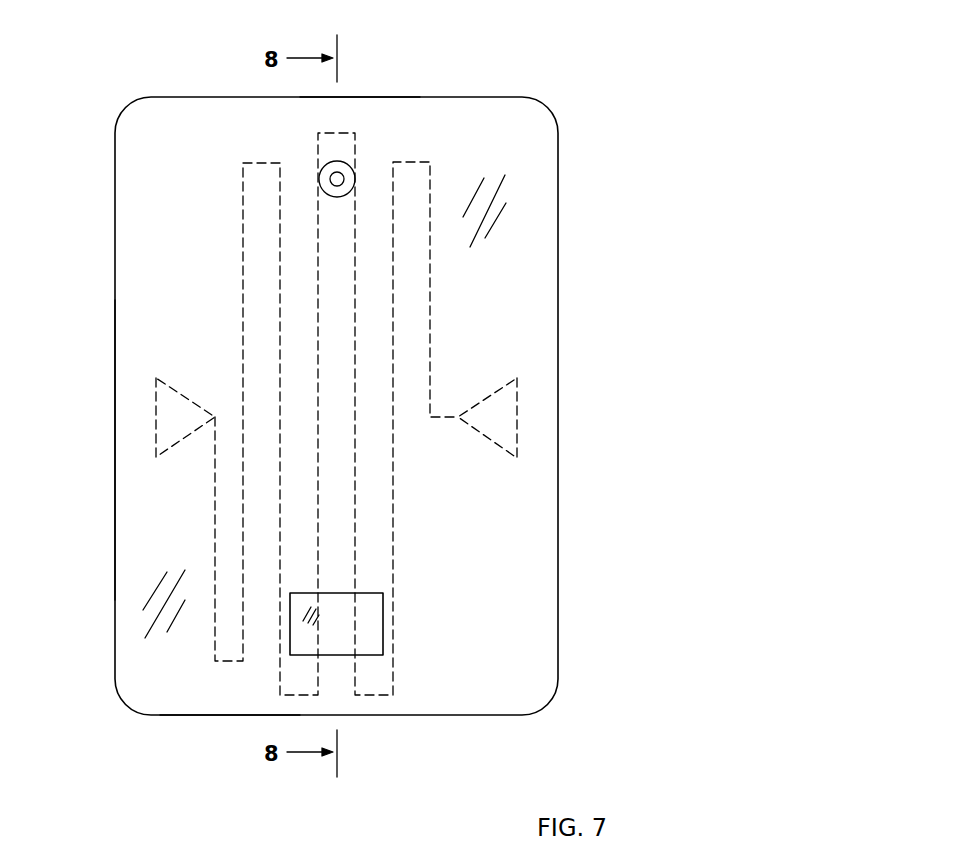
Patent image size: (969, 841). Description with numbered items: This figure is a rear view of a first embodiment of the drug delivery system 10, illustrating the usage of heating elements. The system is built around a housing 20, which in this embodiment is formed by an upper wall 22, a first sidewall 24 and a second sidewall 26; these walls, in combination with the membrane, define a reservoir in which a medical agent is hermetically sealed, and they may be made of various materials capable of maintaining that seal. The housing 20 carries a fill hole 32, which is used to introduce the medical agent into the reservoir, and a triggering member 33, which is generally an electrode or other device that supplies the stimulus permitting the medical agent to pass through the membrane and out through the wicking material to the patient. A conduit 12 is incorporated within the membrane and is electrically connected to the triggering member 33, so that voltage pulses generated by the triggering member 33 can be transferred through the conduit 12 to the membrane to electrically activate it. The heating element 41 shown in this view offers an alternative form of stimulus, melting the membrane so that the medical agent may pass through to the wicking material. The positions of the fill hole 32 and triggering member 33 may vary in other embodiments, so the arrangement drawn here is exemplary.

The drug delivery system 10 is at (560, 62).
The conduit 12 is at (243, 298).
The housing 20 is at (208, 93).
The upper wall 22 is at (165, 485).
The first sidewall 24 is at (405, 97).
The second sidewall 26 is at (223, 715).
The fill hole 32 is at (337, 179).
The triggering member 33 is at (367, 622).
The heating element 41 is at (156, 412).